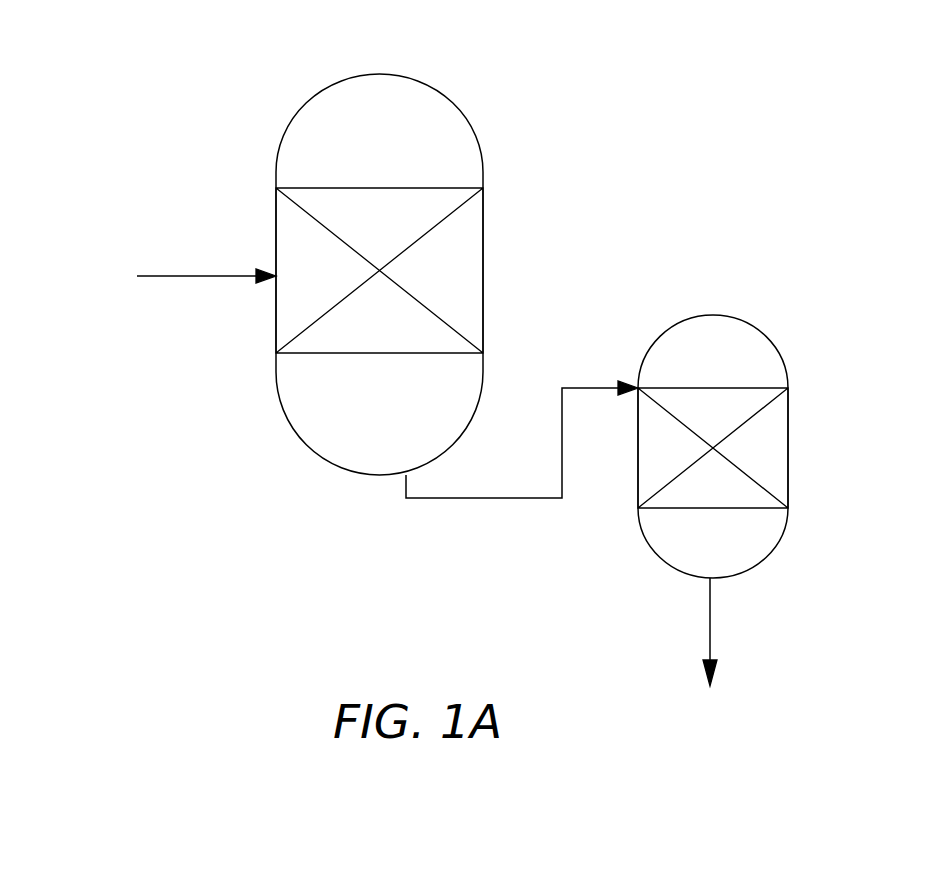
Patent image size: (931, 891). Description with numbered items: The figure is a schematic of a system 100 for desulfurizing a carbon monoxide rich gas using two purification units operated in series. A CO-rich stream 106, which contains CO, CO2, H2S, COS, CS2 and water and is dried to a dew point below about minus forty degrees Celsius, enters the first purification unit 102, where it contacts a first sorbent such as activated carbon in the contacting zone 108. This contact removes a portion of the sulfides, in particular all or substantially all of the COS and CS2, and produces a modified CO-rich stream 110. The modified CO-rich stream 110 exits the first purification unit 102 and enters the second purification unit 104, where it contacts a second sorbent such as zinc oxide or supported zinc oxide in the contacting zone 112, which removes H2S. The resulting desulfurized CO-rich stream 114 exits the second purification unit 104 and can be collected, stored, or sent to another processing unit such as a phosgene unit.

The system 100 is at (119, 58).
The first purification unit 102 is at (293, 172).
The second purification unit 104 is at (688, 320).
The CO-rich stream 106 is at (170, 276).
The contacting zone 108 is at (294, 268).
The modified CO-rich stream 110 is at (481, 498).
The contacting zone 112 is at (766, 427).
The desulfurized CO-rich stream 114 is at (710, 645).